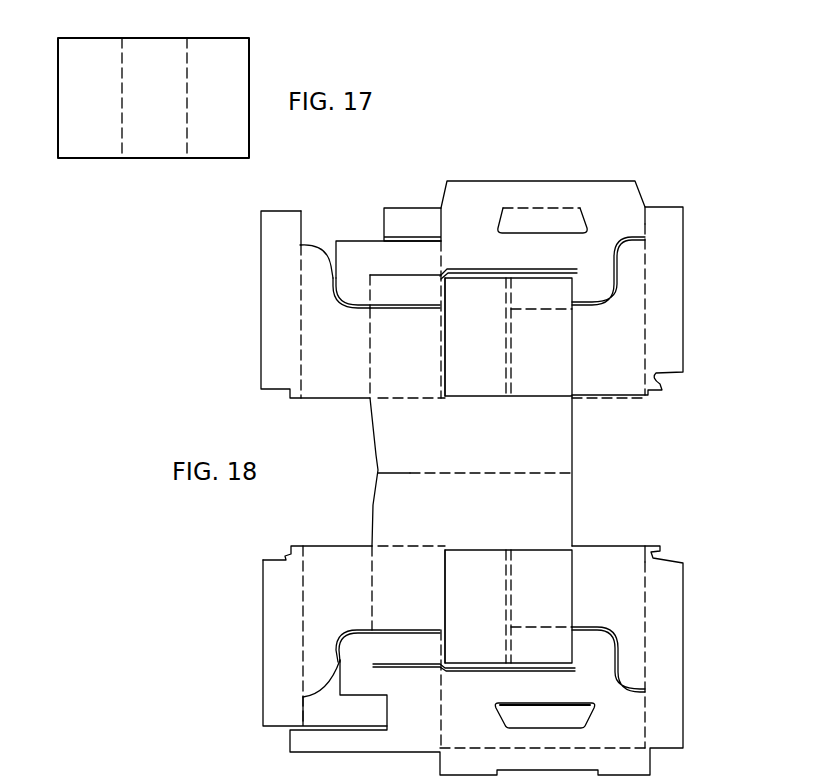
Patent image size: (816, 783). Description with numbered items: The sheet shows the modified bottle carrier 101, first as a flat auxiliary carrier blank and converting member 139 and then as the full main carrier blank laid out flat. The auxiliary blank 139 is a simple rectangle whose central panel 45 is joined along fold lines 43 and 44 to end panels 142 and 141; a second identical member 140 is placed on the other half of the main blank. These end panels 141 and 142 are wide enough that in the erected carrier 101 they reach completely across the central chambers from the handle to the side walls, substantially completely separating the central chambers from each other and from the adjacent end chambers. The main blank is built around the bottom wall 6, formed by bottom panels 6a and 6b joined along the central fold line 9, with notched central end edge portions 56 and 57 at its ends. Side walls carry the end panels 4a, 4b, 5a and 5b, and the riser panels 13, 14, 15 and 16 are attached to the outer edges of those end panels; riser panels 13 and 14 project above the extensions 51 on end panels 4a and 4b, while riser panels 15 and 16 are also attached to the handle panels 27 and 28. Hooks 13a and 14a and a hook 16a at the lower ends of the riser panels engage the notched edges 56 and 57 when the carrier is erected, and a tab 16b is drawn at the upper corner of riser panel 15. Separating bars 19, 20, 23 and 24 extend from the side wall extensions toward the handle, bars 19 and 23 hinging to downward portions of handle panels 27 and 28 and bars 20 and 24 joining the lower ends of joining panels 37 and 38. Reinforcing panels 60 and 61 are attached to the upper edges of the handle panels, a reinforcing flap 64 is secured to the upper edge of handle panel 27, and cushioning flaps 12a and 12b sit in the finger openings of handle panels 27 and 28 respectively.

In FIG. 18, the carrier 101 is at (660, 196).
In FIG. 17, the auxiliary carrier blank and converting member 139 is at (253, 48).
In FIG. 18, the auxiliary carrier blank and converting member 139 is at (443, 342).
In FIG. 18, the auxiliary carrier blank and converting member 140 is at (443, 594).
In FIG. 17, the end panel 141 is at (232, 121).
In FIG. 18, the end panel 141 is at (484, 401).
In FIG. 17, the end panel 142 is at (70, 117).
In FIG. 18, the end panel 142 is at (456, 376).
In FIG. 17, the fold line 43 is at (187, 118).
In FIG. 17, the fold line 44 is at (122, 122).
In FIG. 18, the fold line 44 is at (507, 348).
In FIG. 17, the central panel 45 is at (160, 82).
In FIG. 18, the central panel 45 is at (540, 364).
In FIG. 18, the end panel 4a is at (344, 614).
In FIG. 18, the end panel 4b is at (302, 347).
In FIG. 18, the end panel 5a is at (618, 585).
In FIG. 18, the end panel 5b is at (612, 364).
In FIG. 18, the bottom wall 6 is at (371, 513).
In FIG. 18, the bottom panel 6a is at (512, 507).
In FIG. 18, the bottom panel 6b is at (512, 459).
In FIG. 18, the fold line 9 is at (439, 476).
In FIG. 18, the cushioning flap 12a is at (552, 728).
In FIG. 18, the cushioning flap 12b is at (552, 232).
In FIG. 18, the riser panel 13 is at (288, 646).
In FIG. 18, the hook 13a is at (292, 548).
In FIG. 18, the riser panel 14 is at (290, 274).
In FIG. 18, the hook 14a is at (290, 391).
In FIG. 18, the riser panel 15 is at (670, 612).
In FIG. 18, the riser panel 16 is at (672, 352).
In FIG. 18, the hook 16a is at (657, 396).
In FIG. 18, the tab 16b is at (664, 545).
In FIG. 18, the separating bar 19 is at (548, 624).
In FIG. 18, the separating bar 20 is at (413, 660).
In FIG. 18, the separating bar 23 is at (548, 313).
In FIG. 18, the separating bar 24 is at (413, 302).
In FIG. 18, the handle panel 27 is at (624, 728).
In FIG. 18, the handle panel 28 is at (622, 232).
In FIG. 18, the joining panel 37 is at (418, 690).
In FIG. 18, the joining panel 38 is at (398, 272).
In FIG. 18, the extension 51 is at (310, 246).
In FIG. 18, the notched central end edge portion 56 is at (377, 465).
In FIG. 18, the notched central end edge portion 57 is at (575, 466).
In FIG. 18, the reinforcing panel 60 is at (421, 736).
In FIG. 18, the reinforcing panel 61 is at (415, 232).
In FIG. 18, the reinforcing flap 64 is at (480, 771).